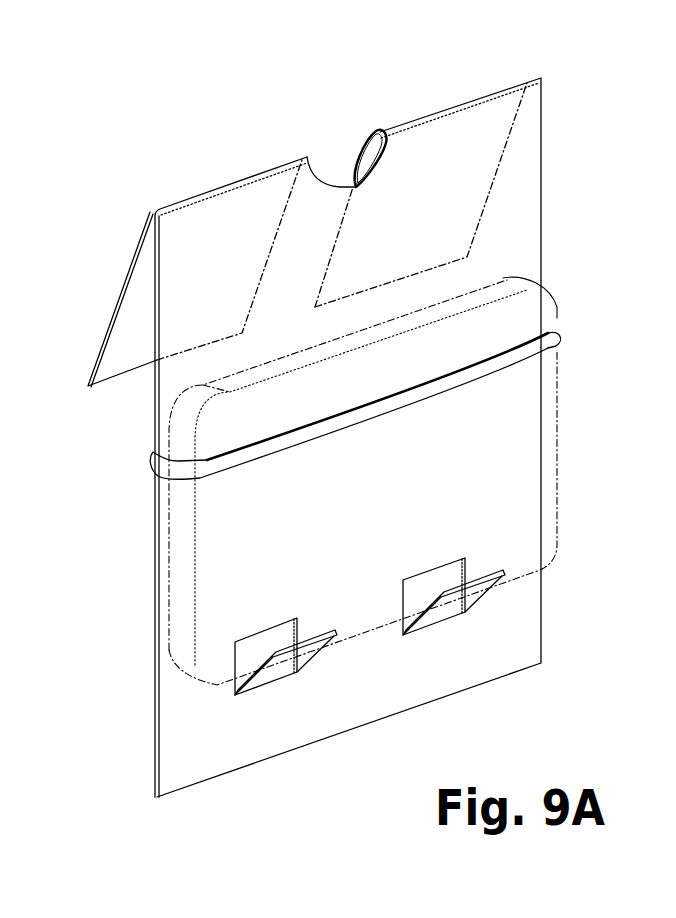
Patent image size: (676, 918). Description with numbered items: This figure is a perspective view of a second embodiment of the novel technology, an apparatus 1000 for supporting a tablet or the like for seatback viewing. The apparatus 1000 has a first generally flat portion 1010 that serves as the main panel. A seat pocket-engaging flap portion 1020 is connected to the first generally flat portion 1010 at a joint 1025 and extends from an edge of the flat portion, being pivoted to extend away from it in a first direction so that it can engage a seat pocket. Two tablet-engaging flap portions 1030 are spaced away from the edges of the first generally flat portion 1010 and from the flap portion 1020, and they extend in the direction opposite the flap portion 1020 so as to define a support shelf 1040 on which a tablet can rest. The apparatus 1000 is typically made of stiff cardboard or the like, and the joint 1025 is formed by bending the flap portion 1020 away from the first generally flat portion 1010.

The apparatus 1000 is at (341, 437).
The first generally flat portion 1010 is at (156, 590).
The seat pocket-engaging flap portion 1020 is at (115, 304).
The joint 1025 is at (553, 343).
The tablet-engaging flap portion 1030 is at (477, 597).
The support shelf 1040 is at (232, 644).